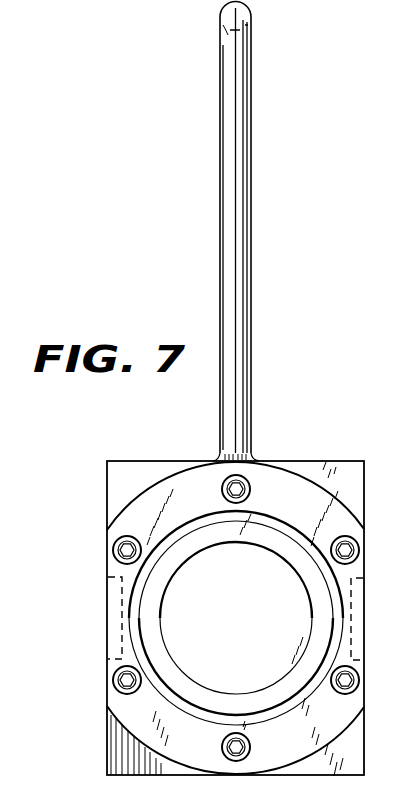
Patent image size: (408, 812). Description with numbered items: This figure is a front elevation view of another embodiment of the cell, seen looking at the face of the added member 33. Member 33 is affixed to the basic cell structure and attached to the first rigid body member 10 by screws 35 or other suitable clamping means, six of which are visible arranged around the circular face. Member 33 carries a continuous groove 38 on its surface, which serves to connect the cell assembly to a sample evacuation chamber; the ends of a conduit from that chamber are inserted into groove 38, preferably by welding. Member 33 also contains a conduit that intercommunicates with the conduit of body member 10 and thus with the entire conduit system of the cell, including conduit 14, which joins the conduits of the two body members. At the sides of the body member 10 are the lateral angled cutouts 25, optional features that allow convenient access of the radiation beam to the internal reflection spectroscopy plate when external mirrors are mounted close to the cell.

The first rigid body member 10 is at (323, 461).
The conduit 14 is at (252, 218).
The lateral angled cutout 25 is at (106, 612).
The member 33 is at (130, 503).
The screws 35 is at (113, 549).
The continuous groove 38 is at (270, 524).